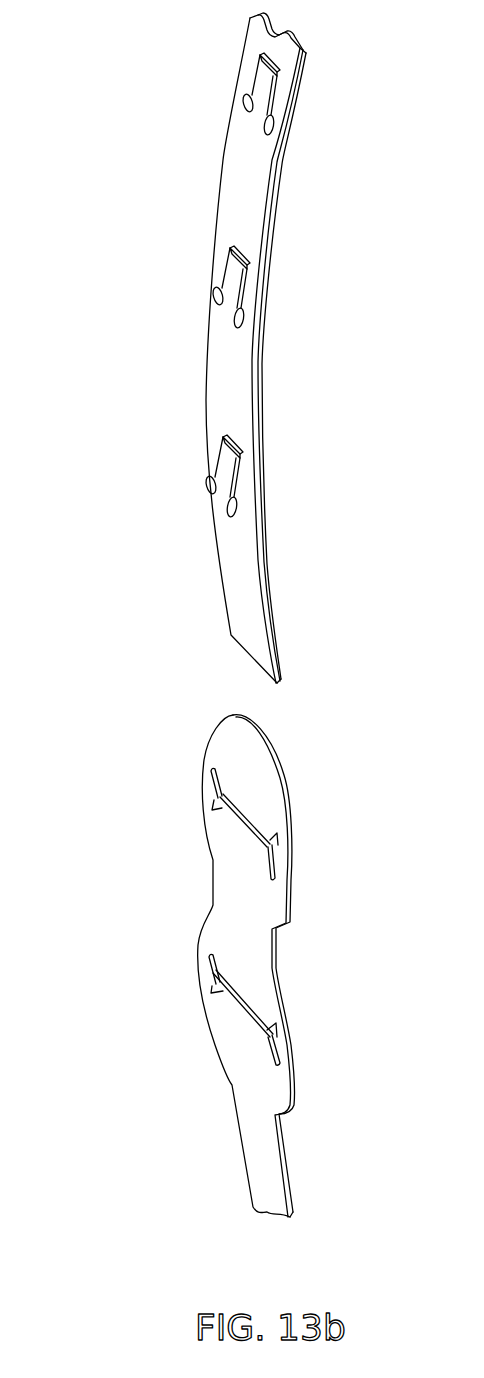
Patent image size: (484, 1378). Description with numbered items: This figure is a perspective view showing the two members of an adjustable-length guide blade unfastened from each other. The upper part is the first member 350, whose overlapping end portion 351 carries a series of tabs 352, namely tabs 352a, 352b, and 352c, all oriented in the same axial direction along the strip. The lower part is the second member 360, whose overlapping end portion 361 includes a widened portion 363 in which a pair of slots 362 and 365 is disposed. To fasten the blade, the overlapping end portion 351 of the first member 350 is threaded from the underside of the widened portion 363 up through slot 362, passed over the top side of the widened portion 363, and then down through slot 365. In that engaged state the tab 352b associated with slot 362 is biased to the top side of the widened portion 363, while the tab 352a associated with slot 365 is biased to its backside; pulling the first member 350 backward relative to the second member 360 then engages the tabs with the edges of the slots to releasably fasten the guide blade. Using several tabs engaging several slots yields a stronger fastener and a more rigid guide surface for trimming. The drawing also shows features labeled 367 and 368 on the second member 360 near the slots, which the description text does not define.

The first member 350 is at (207, 362).
The overlapping end portion 351 is at (245, 583).
The tabs 352 is at (237, 278).
The tab 352a is at (233, 470).
The tab 352b is at (232, 287).
The tab 352c is at (265, 97).
The second member 360 is at (270, 1195).
The overlapping end portion 361 is at (243, 917).
The slot 362 is at (205, 787).
The widened portion 363 is at (294, 818).
The slot 365 is at (280, 1042).
The clip tab 367 is at (273, 863).
The clip bar 368 is at (233, 823).